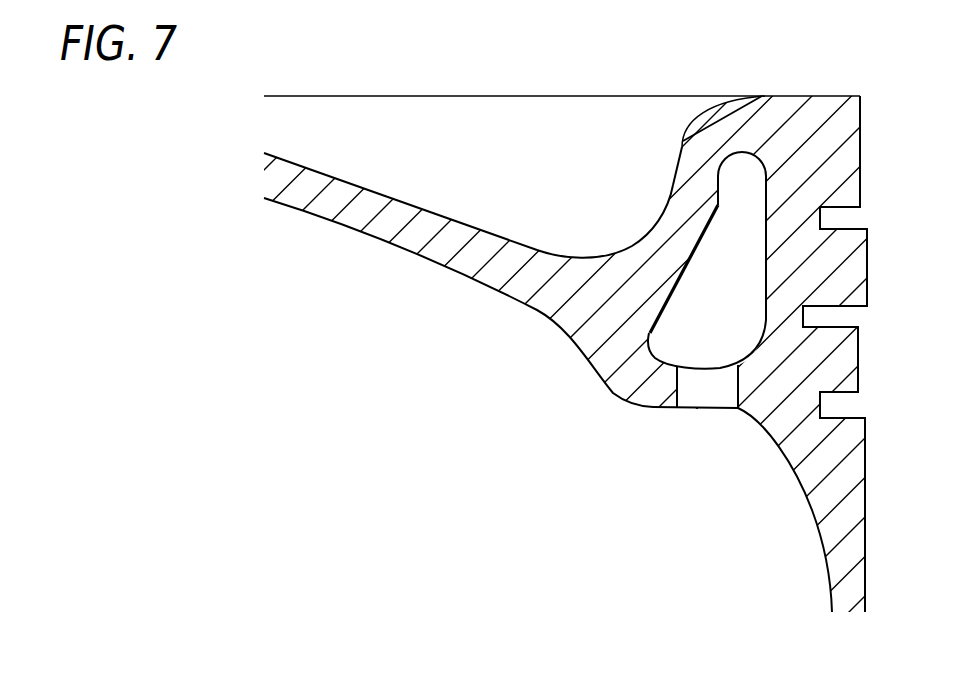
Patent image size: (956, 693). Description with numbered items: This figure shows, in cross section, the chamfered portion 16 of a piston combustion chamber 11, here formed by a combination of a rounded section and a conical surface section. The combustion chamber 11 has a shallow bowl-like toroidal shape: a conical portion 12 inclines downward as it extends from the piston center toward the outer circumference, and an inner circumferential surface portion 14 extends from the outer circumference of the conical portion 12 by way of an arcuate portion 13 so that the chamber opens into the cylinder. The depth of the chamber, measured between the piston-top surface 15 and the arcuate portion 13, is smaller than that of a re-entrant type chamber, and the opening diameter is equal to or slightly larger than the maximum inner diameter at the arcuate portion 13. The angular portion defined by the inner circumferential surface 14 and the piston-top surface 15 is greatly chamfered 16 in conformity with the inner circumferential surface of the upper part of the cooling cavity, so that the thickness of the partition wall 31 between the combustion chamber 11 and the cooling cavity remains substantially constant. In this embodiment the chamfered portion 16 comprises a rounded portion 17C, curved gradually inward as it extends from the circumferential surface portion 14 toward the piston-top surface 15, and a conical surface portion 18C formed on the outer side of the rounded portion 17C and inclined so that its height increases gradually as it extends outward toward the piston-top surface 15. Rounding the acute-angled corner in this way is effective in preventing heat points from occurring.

The combustion chamber 11 is at (330, 113).
The conical portion 12 is at (380, 192).
The arcuate portion 13 is at (647, 235).
The inner circumferential surface portion 14 is at (676, 182).
The piston-top surface 15 is at (829, 96).
The chamfered portion 16 is at (478, 321).
The rounded portion 17C is at (687, 131).
The conical surface portion 18C is at (726, 103).
The partition wall 31 is at (686, 246).